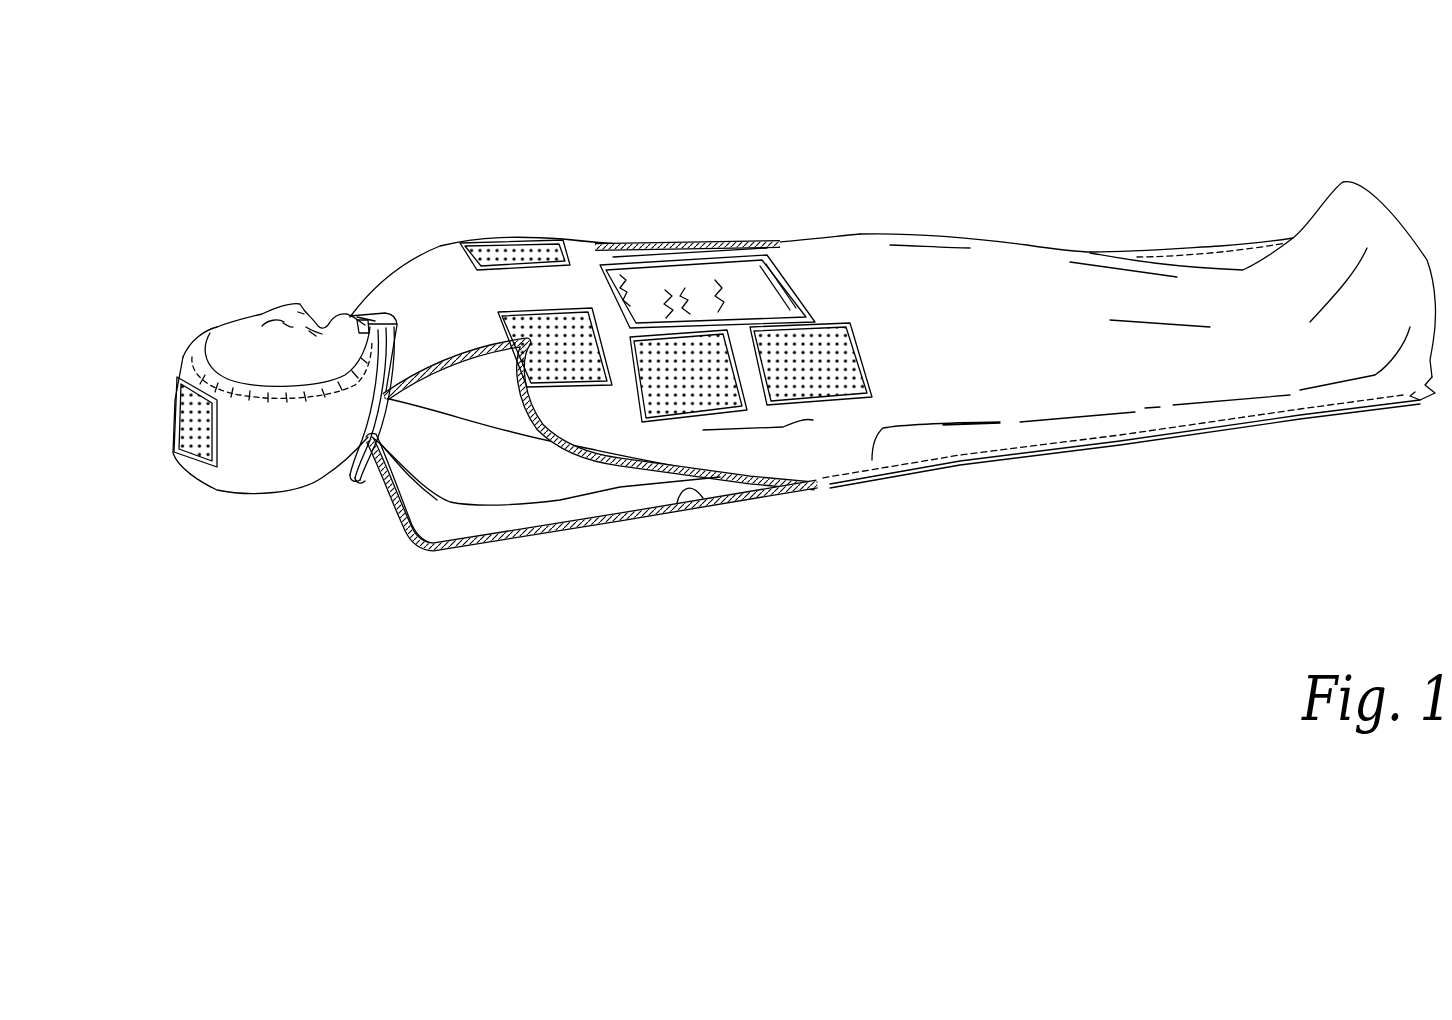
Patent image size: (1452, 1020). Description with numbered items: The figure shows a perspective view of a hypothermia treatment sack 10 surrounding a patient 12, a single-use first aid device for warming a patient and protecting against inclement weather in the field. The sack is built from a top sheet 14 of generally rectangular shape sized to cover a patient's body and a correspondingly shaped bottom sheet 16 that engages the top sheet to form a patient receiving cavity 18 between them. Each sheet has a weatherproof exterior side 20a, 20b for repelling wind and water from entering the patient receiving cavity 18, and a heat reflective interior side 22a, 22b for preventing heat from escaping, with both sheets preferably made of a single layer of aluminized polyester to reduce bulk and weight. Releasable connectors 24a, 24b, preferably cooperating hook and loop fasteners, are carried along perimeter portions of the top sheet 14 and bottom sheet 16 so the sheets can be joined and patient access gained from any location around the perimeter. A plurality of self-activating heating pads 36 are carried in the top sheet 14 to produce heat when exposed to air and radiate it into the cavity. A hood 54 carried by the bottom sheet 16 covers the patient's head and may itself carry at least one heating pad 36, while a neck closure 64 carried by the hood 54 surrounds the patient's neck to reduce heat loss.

The hypothermia treatment sack 10 is at (1244, 122).
The patient 12 is at (292, 303).
The top sheet 14 is at (447, 293).
The bottom sheet 16 is at (540, 540).
The patient receiving cavity 18 is at (460, 480).
The weatherproof exterior side 20a is at (1012, 268).
The weatherproof exterior side 20b is at (1433, 405).
The heat reflective interior side 22a is at (468, 377).
The heat reflective interior side 22b is at (424, 502).
The releasable connector 24a is at (620, 463).
The releasable connector 24b is at (688, 490).
The self-activating heating pads 36 is at (568, 335).
The hood 54 is at (277, 480).
The neck closure 64 is at (370, 306).